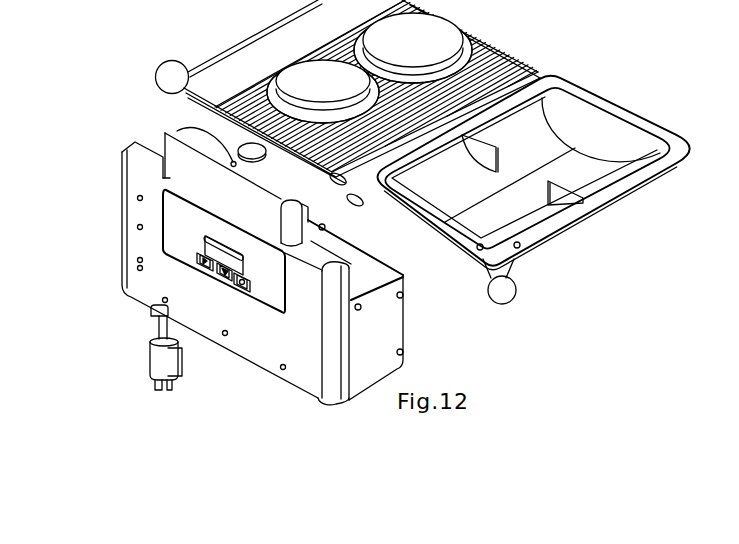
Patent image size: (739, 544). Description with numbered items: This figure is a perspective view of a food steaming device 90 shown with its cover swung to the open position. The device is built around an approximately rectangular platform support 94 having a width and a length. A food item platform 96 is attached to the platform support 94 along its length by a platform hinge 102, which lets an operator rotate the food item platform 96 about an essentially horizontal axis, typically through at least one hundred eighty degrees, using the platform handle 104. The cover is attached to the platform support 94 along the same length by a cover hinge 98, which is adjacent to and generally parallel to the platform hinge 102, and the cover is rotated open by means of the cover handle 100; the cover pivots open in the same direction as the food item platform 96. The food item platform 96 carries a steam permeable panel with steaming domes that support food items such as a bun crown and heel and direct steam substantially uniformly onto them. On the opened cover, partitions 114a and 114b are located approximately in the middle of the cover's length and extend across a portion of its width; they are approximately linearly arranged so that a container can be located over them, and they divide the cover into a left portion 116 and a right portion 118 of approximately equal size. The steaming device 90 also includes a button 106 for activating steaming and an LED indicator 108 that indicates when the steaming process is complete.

The food steaming device 90 is at (86, 63).
The platform support 94 is at (338, 204).
The food item platform 96 is at (258, 100).
The cover hinge 98 is at (545, 74).
The cover handle 100 is at (502, 292).
The platform hinge 102 is at (538, 72).
The platform handle 104 is at (173, 77).
The button 106 is at (252, 148).
The LED indicator 108 is at (177, 131).
The partition 114a is at (485, 146).
The partition 114b is at (570, 203).
The left portion 116 is at (524, 167).
The right portion 118 is at (590, 130).